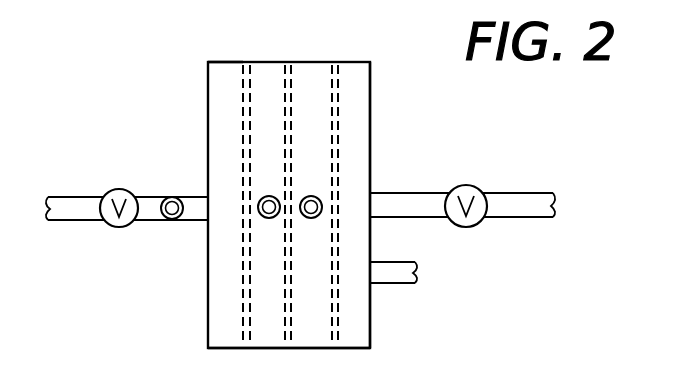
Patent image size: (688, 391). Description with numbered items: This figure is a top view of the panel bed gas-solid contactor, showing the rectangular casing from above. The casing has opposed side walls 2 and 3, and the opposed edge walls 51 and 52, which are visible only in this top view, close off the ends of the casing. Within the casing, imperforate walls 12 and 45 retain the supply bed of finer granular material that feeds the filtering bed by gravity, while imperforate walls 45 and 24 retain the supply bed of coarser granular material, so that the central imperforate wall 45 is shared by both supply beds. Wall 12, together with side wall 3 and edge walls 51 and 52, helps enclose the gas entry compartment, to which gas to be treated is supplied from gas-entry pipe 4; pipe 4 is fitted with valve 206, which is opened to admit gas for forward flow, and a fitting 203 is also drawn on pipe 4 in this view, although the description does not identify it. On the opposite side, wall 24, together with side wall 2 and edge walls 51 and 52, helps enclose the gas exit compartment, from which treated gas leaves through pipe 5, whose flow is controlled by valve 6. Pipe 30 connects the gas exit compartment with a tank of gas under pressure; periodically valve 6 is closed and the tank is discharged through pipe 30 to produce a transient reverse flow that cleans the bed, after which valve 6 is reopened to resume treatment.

The side wall 2 is at (370, 320).
The side wall 3 is at (208, 285).
The gas-entry pipe 4 is at (147, 222).
The pipe 5 is at (417, 193).
The valve 6 is at (475, 183).
The imperforate wall 12 is at (243, 106).
The imperforate wall 24 is at (340, 107).
The pipe 30 is at (403, 283).
The imperforate wall 45 is at (292, 85).
The edge wall 51 is at (229, 62).
The edge wall 52 is at (268, 348).
The inlet port 203 is at (173, 195).
The valve 206 is at (108, 226).